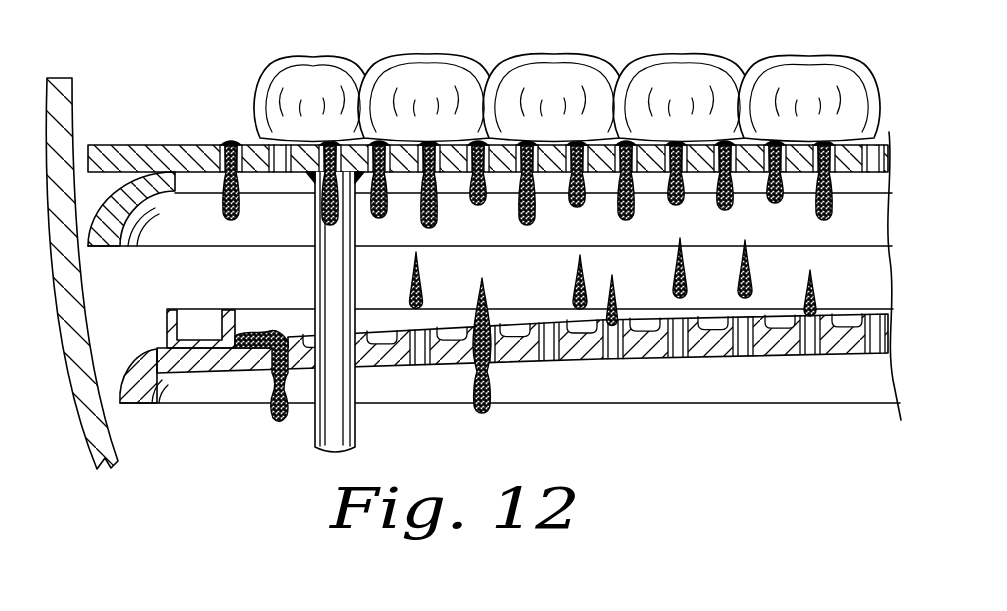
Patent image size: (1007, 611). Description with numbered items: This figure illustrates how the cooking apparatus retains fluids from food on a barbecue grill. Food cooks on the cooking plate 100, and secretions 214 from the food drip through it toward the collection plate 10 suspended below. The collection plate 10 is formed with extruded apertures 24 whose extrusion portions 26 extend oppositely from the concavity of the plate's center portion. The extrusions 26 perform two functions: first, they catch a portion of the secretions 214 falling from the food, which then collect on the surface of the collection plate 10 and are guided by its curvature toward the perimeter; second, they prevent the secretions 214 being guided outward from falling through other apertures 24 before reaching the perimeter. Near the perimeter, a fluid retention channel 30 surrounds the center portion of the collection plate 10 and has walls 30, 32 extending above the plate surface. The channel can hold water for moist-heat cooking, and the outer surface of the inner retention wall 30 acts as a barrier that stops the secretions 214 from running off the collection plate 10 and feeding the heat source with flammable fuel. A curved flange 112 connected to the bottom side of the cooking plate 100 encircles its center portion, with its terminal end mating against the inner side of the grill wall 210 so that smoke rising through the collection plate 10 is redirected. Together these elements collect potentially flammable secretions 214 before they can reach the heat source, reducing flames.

The collection plate 10 is at (822, 366).
The extruded apertures 24 is at (421, 368).
The extrusion portions 26 is at (432, 365).
The fluid retention channel 30 is at (215, 333).
The retention channel wall 32 is at (155, 380).
The cooking plate 100 is at (141, 146).
The curved flange 112 is at (148, 226).
The grill walls 210 is at (81, 280).
The secretions 214 is at (223, 204).